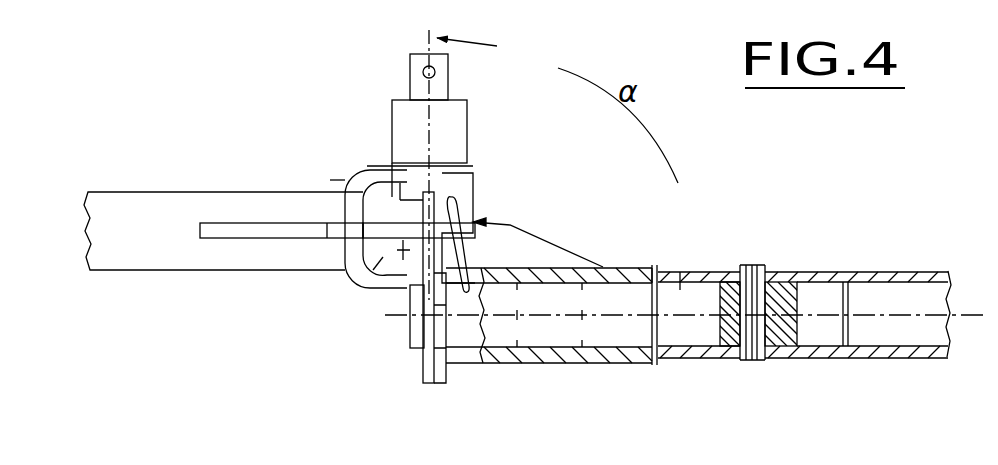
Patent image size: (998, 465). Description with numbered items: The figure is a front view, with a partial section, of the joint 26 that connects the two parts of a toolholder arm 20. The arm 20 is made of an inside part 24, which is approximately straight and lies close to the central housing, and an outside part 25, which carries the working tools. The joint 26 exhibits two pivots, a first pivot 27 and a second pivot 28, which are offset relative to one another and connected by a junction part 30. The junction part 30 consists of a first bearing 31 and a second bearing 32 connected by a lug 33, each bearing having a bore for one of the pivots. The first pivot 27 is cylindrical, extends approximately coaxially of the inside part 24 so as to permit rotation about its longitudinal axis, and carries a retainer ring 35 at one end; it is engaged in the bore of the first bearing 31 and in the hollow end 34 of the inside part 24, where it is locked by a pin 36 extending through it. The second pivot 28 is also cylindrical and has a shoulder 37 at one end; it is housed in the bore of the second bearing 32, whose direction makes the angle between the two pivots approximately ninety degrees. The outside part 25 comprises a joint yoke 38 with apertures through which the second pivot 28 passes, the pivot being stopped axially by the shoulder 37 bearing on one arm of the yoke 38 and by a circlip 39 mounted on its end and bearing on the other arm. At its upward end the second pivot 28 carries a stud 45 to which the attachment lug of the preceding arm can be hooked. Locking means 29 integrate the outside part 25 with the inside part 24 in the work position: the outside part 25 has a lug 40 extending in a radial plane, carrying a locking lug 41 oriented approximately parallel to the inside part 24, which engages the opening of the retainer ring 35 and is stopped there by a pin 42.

The toolholder arm 20 is at (853, 268).
The inside part 24 is at (903, 293).
The outside part 25 is at (138, 212).
The joint 26 is at (419, 164).
The first pivot 27 is at (716, 300).
The second pivot 28 is at (360, 300).
The locking means 29 is at (375, 237).
The junction part 30 is at (518, 253).
The first bearing 31 is at (582, 358).
The second bearing 32 is at (400, 197).
The lug 33 is at (553, 255).
The hollow end 34 is at (887, 328).
The retainer ring 35 is at (436, 376).
The pin 36 is at (758, 360).
The shoulder 37 is at (497, 164).
The joint yoke 38 is at (340, 180).
The circlip 39 is at (410, 293).
The lug 40 is at (261, 236).
The locking lug 41 is at (477, 214).
The pin 42 is at (458, 112).
The stud 45 is at (413, 87).